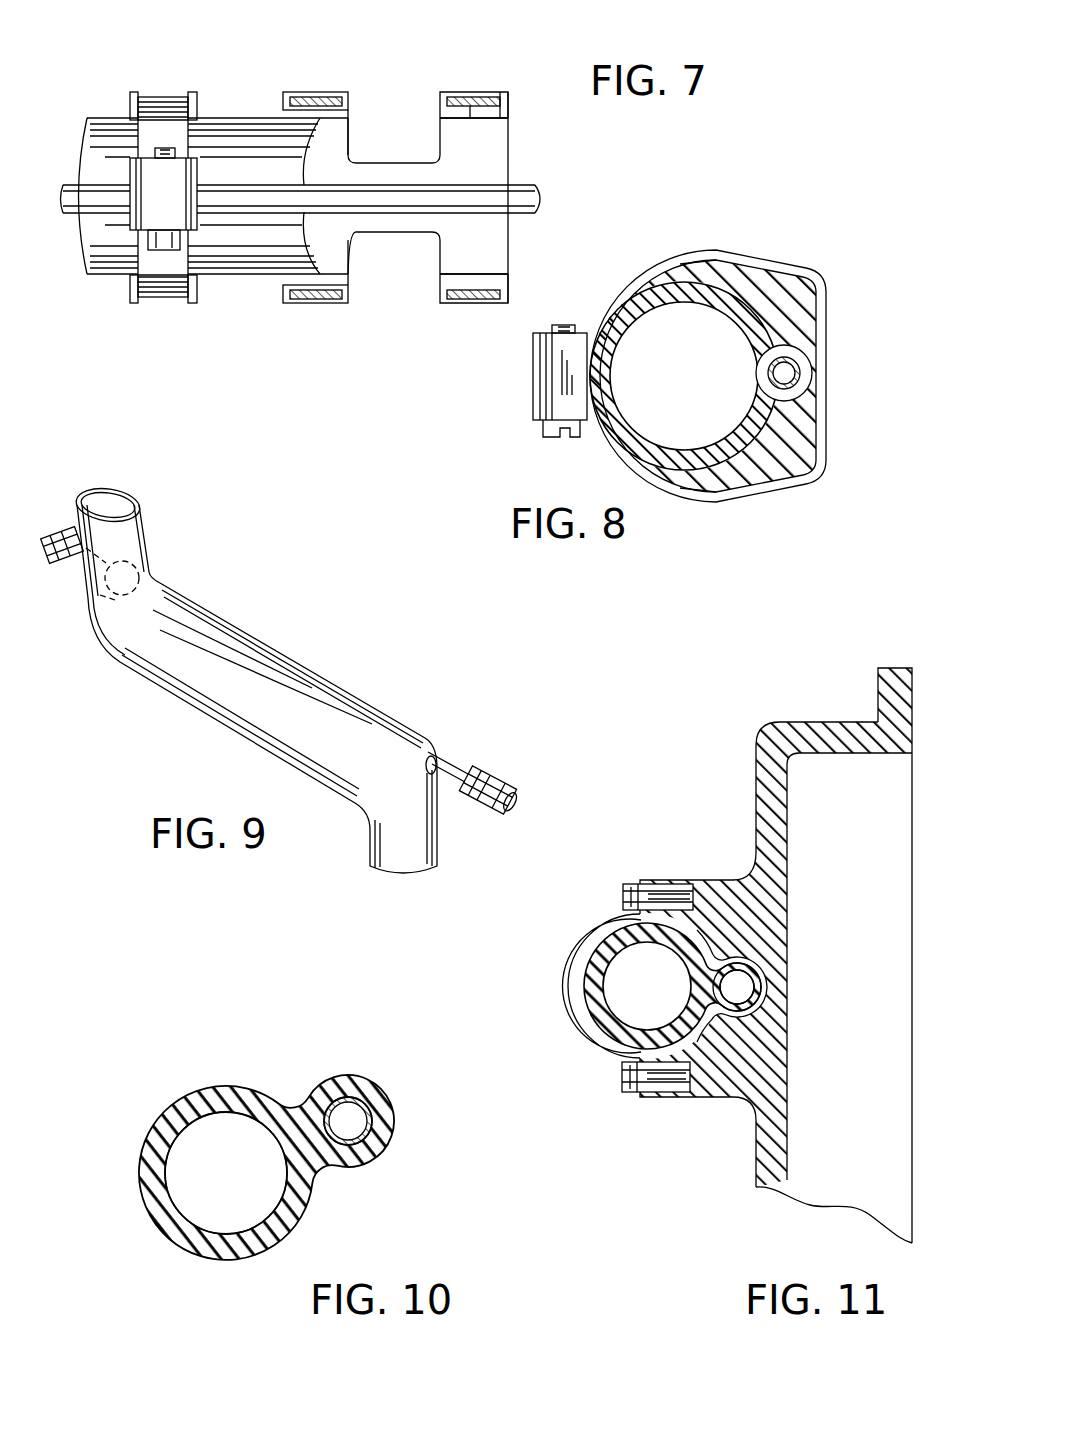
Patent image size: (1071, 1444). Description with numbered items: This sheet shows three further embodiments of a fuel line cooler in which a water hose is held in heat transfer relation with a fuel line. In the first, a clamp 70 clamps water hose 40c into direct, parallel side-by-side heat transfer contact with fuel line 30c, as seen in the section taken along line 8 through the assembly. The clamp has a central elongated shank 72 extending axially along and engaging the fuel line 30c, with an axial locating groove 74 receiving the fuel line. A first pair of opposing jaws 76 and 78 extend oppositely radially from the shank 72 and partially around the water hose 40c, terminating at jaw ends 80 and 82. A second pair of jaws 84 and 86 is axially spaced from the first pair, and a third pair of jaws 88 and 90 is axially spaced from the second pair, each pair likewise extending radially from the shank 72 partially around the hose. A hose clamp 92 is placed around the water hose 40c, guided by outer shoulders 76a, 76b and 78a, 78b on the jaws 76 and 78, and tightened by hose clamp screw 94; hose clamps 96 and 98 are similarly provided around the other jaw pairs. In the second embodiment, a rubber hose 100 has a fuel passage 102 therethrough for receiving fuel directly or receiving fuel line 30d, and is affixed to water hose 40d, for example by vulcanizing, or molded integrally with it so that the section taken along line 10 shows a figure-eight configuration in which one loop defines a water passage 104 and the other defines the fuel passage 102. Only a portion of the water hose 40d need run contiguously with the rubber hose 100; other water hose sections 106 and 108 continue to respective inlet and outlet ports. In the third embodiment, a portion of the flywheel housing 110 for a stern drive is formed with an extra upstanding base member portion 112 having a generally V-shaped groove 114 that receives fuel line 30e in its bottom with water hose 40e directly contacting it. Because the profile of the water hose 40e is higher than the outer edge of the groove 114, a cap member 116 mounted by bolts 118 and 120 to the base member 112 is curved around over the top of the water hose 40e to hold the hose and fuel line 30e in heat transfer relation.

In FIG. 7, the section line 8— 8 is at (471, 88).
In FIG. 9, the section line 10— 10 is at (362, 674).
In FIG. 7, the fuel line 30c is at (522, 185).
In FIG. 8, the fuel line 30c is at (770, 382).
In FIG. 9, the fuel line 30d is at (500, 785).
In FIG. 10, the fuel line 30d is at (390, 1140).
In FIG. 11, the fuel line 30e is at (762, 990).
In FIG. 7, the water hose 40c is at (262, 118).
In FIG. 8, the water hose 40c is at (731, 305).
In FIG. 9, the water hose 40d is at (200, 692).
In FIG. 10, the water hose 40d is at (240, 1100).
In FIG. 11, the water hose 40e is at (602, 1028).
In FIG. 7, the clamp 70 is at (320, 334).
In FIG. 7, the central elongated shank 72 is at (392, 172).
In FIG. 8, the central elongated shank 72 is at (800, 330).
In FIG. 8, the axial locating groove 74 is at (797, 360).
In FIG. 7, the jaw 76 is at (492, 140).
In FIG. 8, the jaw 76 is at (778, 290).
In FIG. 7, the outer shoulder 76a is at (510, 95).
In FIG. 7, the outer shoulder 76b is at (450, 92).
In FIG. 7, the jaw 78 is at (492, 240).
In FIG. 8, the jaw 78 is at (777, 456).
In FIG. 7, the outer shoulder 78a is at (490, 298).
In FIG. 7, the outer shoulder 78b is at (445, 297).
In FIG. 7, the jaw end 80 is at (478, 95).
In FIG. 8, the jaw end 80 is at (684, 266).
In FIG. 7, the jaw end 82 is at (480, 290).
In FIG. 8, the jaw end 82 is at (684, 482).
In FIG. 7, the jaw 84 is at (356, 128).
In FIG. 7, the jaw 86 is at (340, 250).
In FIG. 7, the jaw 88 is at (193, 95).
In FIG. 7, the jaw 90 is at (190, 298).
In FIG. 7, the hose clamp 92 is at (492, 92).
In FIG. 8, the hose clamp 92 is at (728, 252).
In FIG. 8, the hose clamp screw 94 is at (545, 432).
In FIG. 7, the hose clamp 96 is at (320, 92).
In FIG. 7, the hose clamp 98 is at (152, 95).
In FIG. 9, the rubber hose 100 is at (258, 645).
In FIG. 10, the rubber hose 100 is at (330, 1085).
In FIG. 10, the fuel passage 102 is at (355, 1110).
In FIG. 10, the water passage 104 is at (215, 1090).
In FIG. 9, the water hose section 106 is at (142, 520).
In FIG. 9, the water hose section 108 is at (372, 838).
In FIG. 11, the flywheel housing 110 is at (782, 735).
In FIG. 11, the base member portion 112 is at (745, 880).
In FIG. 11, the groove 114 is at (752, 975).
In FIG. 11, the cap member 116 is at (605, 940).
In FIG. 11, the bolt 118 is at (635, 884).
In FIG. 11, the bolt 120 is at (630, 1095).